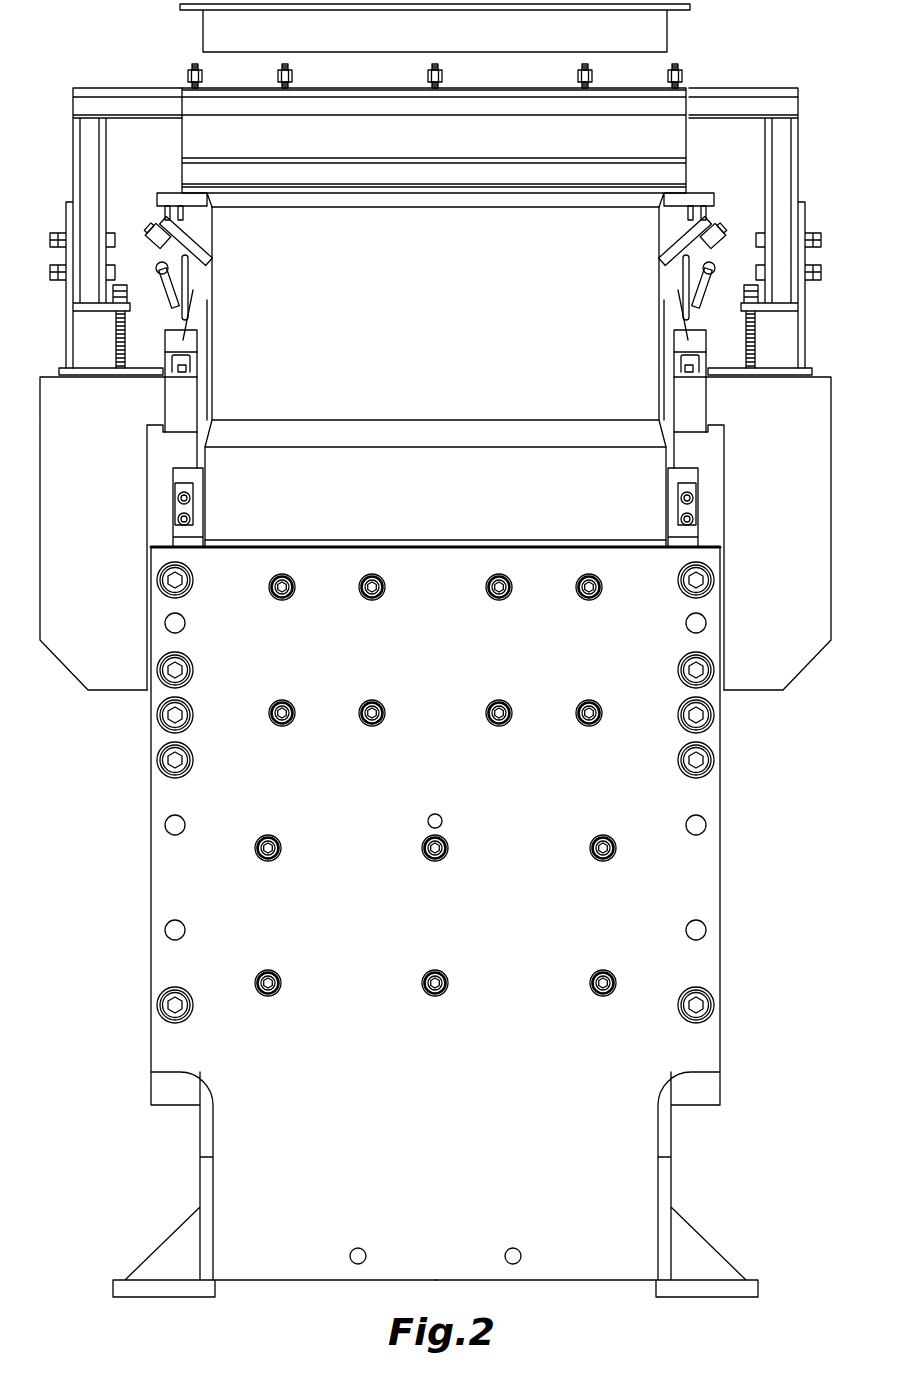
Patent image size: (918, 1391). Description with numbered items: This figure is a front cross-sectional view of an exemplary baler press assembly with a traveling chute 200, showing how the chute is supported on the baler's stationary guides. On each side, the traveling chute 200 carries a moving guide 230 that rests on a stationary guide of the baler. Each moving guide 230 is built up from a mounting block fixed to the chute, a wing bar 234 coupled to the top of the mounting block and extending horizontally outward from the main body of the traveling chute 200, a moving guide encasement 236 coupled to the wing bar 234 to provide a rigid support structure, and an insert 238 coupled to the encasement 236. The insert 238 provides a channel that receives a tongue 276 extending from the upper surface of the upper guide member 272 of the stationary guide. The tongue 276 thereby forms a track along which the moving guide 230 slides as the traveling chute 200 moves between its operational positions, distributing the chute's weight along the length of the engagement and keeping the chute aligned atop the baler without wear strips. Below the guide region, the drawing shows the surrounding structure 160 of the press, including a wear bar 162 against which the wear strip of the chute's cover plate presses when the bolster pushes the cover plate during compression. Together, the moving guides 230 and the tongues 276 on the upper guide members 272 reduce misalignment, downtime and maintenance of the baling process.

The mounting block 160 is at (175, 448).
The wear bar 162 is at (188, 477).
The traveling chute 200 is at (150, 211).
The moving guide 230 is at (155, 342).
The wing bar 234 is at (200, 287).
The moving guide encasement 236 is at (190, 352).
The insert 238 is at (163, 372).
The upper guide member 272 is at (173, 411).
The tongue 276 is at (173, 370).